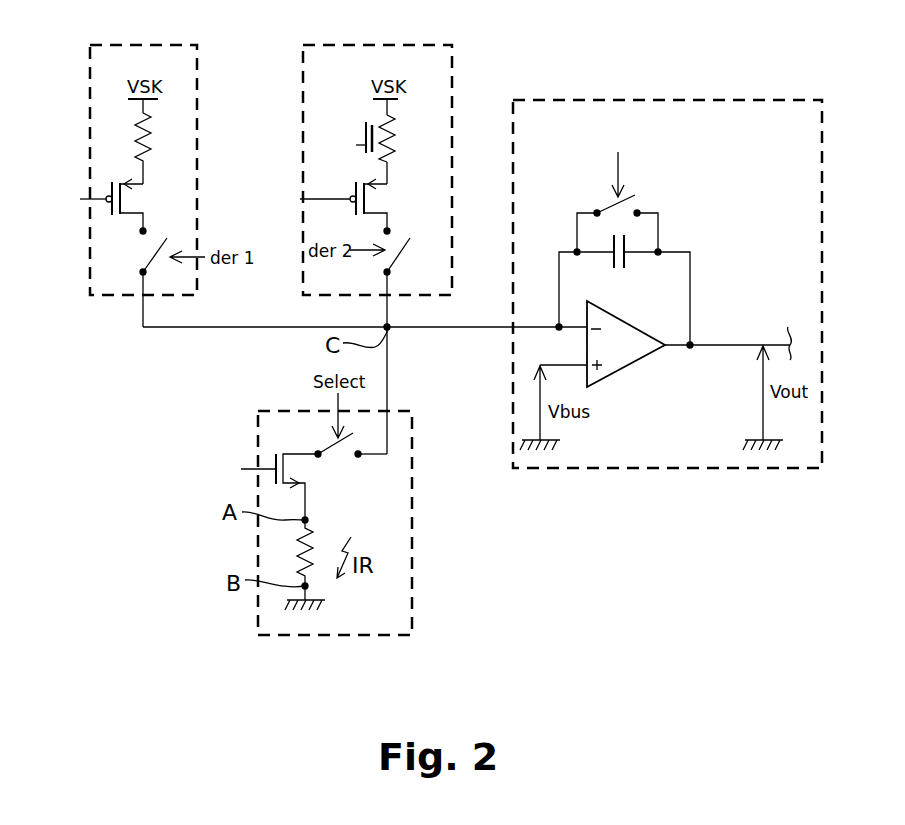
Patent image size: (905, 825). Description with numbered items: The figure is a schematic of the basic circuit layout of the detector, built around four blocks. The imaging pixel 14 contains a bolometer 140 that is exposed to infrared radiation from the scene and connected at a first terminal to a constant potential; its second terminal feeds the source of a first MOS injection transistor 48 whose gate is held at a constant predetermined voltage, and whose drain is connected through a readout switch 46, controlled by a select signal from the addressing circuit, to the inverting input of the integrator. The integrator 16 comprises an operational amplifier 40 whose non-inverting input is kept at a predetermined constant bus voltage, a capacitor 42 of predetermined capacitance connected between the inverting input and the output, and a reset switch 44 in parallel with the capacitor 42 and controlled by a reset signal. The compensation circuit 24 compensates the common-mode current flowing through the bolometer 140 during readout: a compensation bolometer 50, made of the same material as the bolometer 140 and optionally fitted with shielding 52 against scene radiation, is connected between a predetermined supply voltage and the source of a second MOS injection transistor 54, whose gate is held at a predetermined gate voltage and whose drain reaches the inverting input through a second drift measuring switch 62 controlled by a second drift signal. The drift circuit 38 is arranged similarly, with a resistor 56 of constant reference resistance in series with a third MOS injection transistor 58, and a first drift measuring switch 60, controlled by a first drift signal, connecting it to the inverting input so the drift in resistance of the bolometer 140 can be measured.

The imaging pixel 14 is at (258, 624).
The integrator 16 is at (603, 100).
The compensation circuit 24 is at (303, 78).
The drift circuit 38 is at (90, 112).
The operational amplifier 40 is at (628, 355).
The capacitor 42 is at (627, 258).
The reset switch 44 is at (597, 210).
The readout switch 46 is at (333, 445).
The first MOS injection transistor 48 is at (297, 470).
The compensation bolometer 50 is at (395, 135).
The shielding 52 is at (356, 145).
The second MOS injection transistor 54 is at (374, 215).
The resistor 56 is at (150, 137).
The third MOS injection transistor 58 is at (130, 214).
The first drift measuring switch 60 is at (138, 253).
The second drift measuring switch 62 is at (412, 262).
The bolometer 140 is at (297, 550).